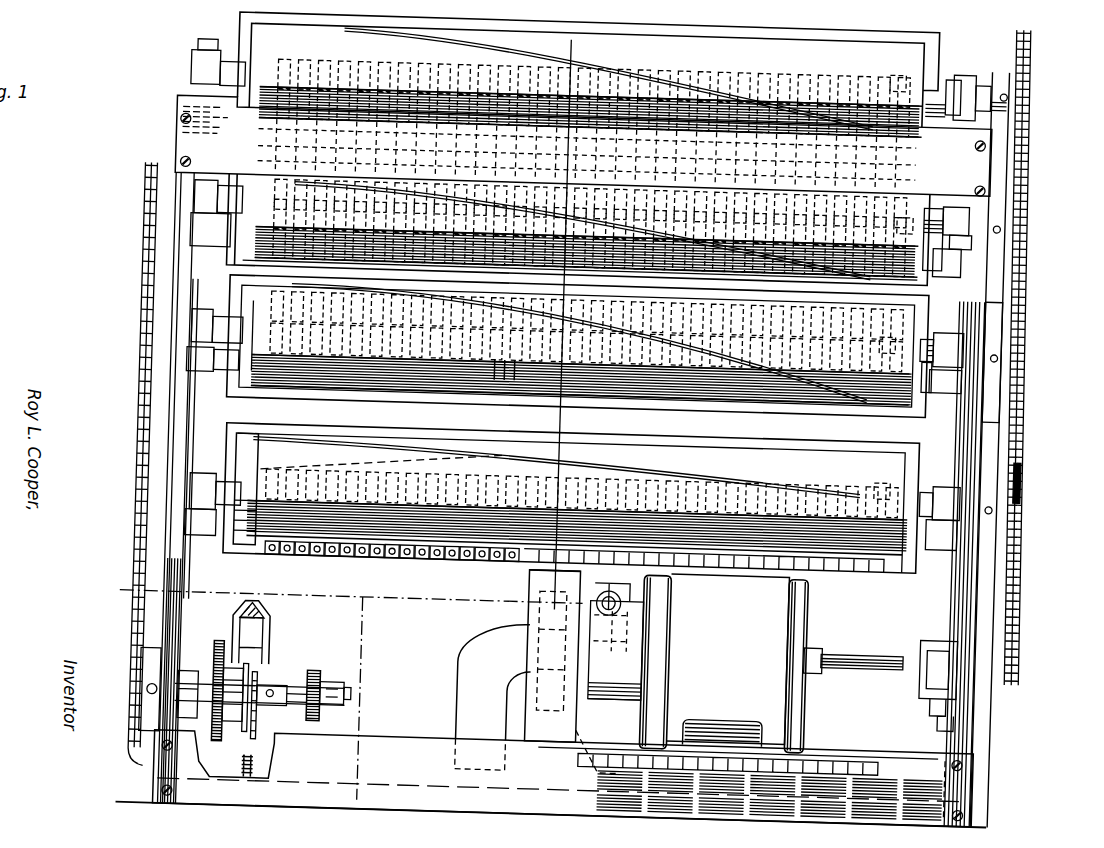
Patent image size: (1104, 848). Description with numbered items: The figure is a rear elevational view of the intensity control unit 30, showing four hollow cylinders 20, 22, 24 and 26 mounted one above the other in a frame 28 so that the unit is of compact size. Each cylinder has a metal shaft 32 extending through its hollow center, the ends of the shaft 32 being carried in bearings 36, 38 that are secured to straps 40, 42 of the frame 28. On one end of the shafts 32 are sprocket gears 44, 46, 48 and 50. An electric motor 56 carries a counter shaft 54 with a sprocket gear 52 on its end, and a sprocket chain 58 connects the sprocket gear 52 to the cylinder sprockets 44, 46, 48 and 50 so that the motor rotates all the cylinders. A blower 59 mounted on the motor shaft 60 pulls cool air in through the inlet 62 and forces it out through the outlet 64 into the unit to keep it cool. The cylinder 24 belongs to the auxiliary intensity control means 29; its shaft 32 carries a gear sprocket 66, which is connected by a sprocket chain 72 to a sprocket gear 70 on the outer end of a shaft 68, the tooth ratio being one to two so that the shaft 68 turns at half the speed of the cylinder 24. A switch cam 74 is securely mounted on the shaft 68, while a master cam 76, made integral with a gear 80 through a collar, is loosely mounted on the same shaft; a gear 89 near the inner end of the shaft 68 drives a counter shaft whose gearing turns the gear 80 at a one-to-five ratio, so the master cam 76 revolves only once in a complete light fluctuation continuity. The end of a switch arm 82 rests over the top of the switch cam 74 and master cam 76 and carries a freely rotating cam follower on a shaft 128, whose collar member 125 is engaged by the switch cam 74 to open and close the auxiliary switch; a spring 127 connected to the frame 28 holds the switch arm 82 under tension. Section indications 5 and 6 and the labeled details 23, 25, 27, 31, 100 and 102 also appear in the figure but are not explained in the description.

The section line 5- 5 is at (466, 412).
The section line 6- 6 is at (345, 594).
The hollow cylinder 20 is at (923, 551).
The hollow cylinder 22 is at (910, 292).
The rotary brush 23 is at (627, 50).
The hollow cylinder 24 is at (1019, 271).
The brush end cap 25 is at (262, 474).
The hollow cylinder 26 is at (947, 52).
The brush end plate 27 is at (254, 376).
The frame 28 is at (995, 750).
The auxiliary intensity control means 29 is at (249, 204).
The intensity control unit 30 is at (1038, 371).
The upper housing 31 is at (247, 41).
The metal shaft 32 is at (227, 179).
The bearing 36 is at (210, 337).
The bearing 38 is at (988, 340).
The strap 40 is at (205, 363).
The strap 42 is at (975, 382).
The sprocket gear 44 is at (1029, 509).
The sprocket gear 46 is at (1021, 332).
The sprocket gear 48 is at (1028, 208).
The sprocket gear 50 is at (1035, 88).
The sprocket gear 52 is at (1020, 633).
The counter shaft 54 is at (893, 654).
The electric motor 56 is at (827, 703).
The sprocket chain 58 is at (1046, 147).
The blower 59 is at (547, 601).
The motor shaft 60 is at (681, 662).
The inlet 62 is at (482, 717).
The outlet 64 is at (558, 566).
The gear sprocket 66 is at (157, 199).
The shaft 68 is at (334, 712).
The sprocket gear 70 is at (130, 761).
The sprocket chain 72 is at (155, 676).
The switch cam 74 is at (283, 680).
The master cam 76 is at (272, 740).
The gear 80 is at (238, 650).
The switch arm 82 is at (290, 610).
The gear 89 is at (371, 690).
The brush tufts 100 is at (527, 374).
The mounting hole 102 is at (901, 63).
The collar member 125 is at (272, 646).
The spring 127 is at (285, 769).
The shaft 128 is at (300, 668).